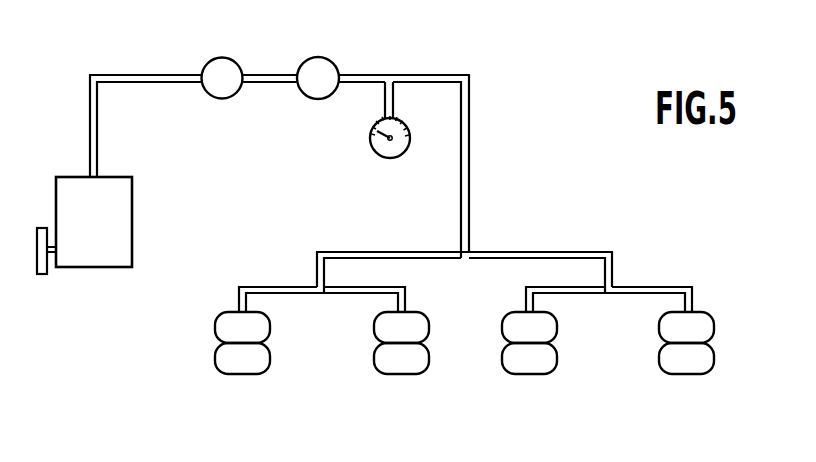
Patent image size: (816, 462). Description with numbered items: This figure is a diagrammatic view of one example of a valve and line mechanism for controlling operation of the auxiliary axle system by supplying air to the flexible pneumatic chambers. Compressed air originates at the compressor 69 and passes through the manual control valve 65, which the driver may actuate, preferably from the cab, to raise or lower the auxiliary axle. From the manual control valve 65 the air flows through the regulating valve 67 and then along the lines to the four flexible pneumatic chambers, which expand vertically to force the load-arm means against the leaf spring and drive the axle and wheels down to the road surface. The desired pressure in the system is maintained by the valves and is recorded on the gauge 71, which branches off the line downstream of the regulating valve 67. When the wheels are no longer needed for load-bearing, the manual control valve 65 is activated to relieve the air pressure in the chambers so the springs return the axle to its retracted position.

The manual control valve 65 is at (222, 57).
The regulating valve 67 is at (318, 57).
The compressor 69 is at (122, 198).
The gauge 71 is at (411, 136).